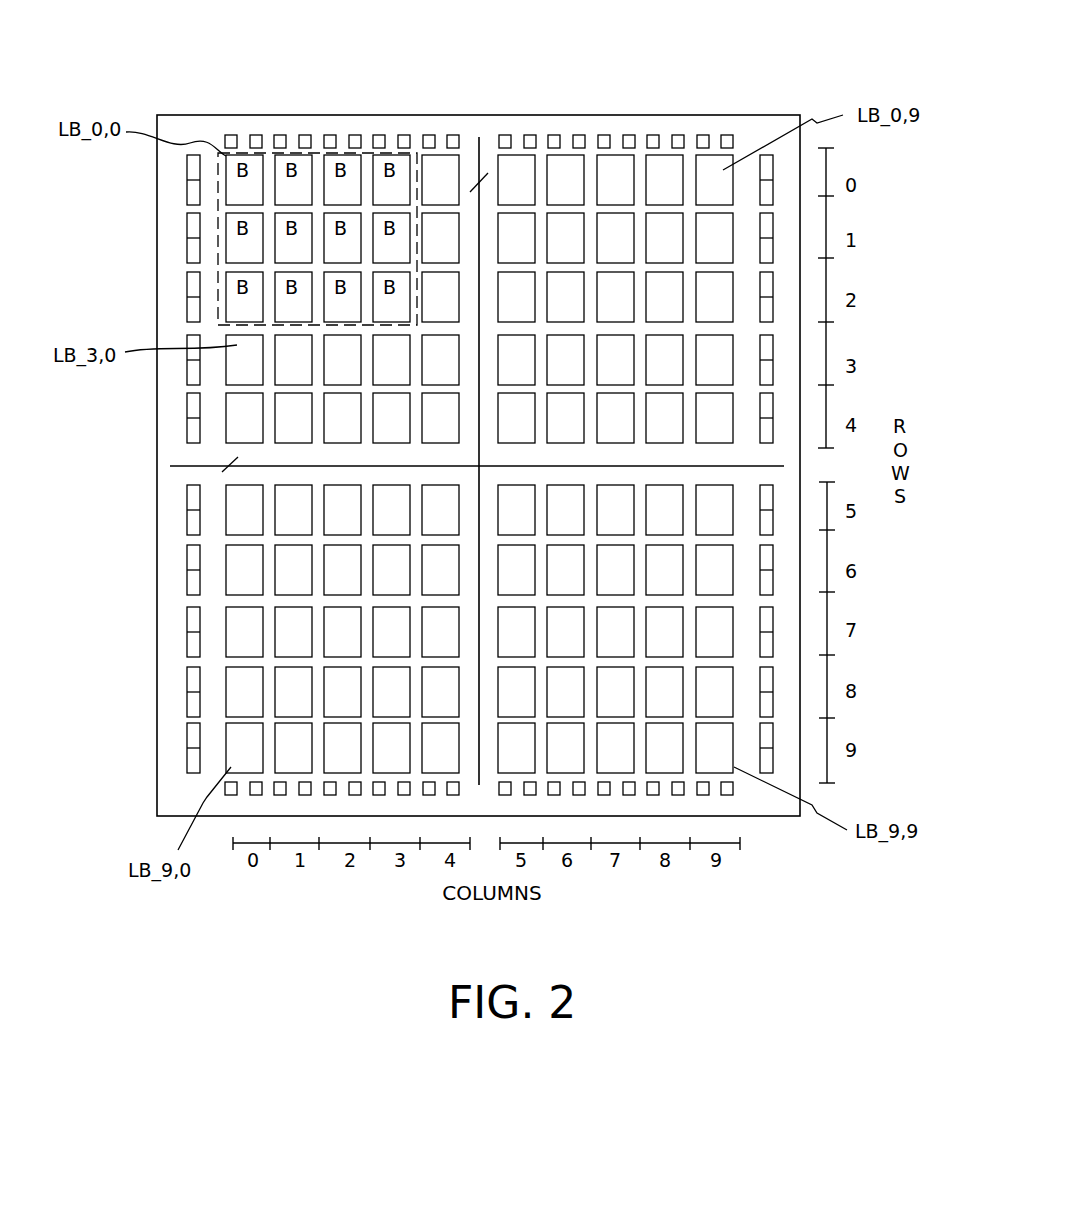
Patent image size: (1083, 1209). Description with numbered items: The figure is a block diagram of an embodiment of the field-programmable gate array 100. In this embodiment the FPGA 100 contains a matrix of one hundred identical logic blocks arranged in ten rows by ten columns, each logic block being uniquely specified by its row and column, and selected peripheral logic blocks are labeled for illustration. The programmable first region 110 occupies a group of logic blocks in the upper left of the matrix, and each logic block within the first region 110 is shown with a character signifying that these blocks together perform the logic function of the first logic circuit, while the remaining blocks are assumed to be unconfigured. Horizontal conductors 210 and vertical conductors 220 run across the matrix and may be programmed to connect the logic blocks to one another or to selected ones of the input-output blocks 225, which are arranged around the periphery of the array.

The field-programmable gate array 100 is at (645, 70).
The first region 110 is at (218, 267).
The horizontal conductors 210 is at (172, 466).
The vertical conductors 220 is at (478, 152).
The input-output blocks 225 is at (231, 134).